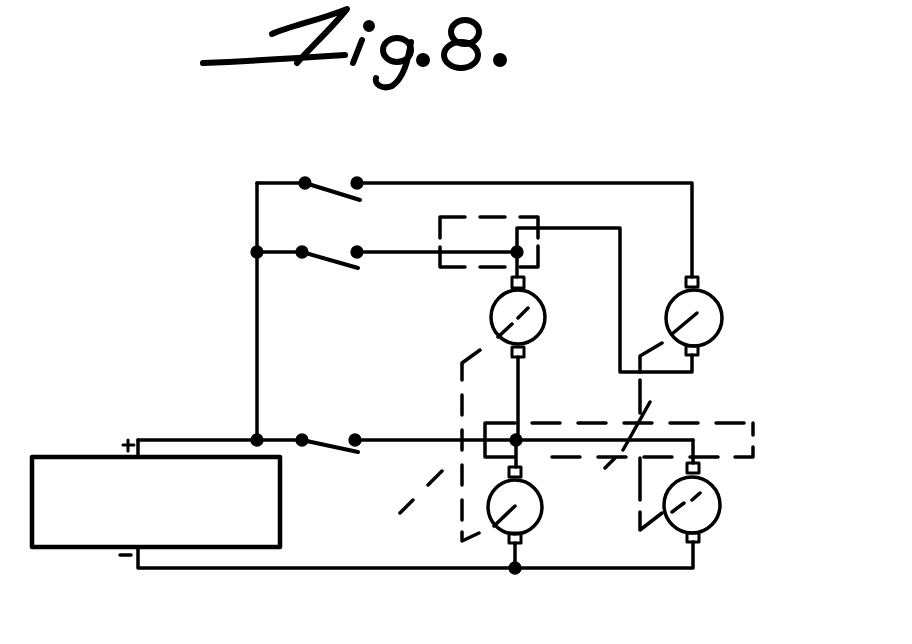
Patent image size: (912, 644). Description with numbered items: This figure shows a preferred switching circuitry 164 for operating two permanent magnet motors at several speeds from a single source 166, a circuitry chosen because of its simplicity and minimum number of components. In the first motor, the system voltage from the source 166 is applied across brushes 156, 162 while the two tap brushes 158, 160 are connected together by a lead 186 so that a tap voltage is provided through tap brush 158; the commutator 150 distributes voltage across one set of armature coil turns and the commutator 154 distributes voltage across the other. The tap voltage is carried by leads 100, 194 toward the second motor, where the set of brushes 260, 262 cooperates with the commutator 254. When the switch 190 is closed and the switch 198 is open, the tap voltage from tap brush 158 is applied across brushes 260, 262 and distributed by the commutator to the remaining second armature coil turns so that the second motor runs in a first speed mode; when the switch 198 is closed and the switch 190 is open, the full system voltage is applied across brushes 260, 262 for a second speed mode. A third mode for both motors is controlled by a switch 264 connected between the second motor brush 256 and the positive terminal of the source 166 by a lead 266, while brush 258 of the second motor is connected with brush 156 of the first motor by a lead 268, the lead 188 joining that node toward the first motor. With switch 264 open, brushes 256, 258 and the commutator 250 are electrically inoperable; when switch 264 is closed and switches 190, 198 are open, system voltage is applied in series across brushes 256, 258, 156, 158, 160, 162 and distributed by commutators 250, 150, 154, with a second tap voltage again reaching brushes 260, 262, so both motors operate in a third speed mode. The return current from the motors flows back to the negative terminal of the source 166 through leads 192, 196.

The lead 100 is at (448, 439).
The commutator 150 is at (531, 319).
The commutator 154 is at (527, 507).
The brush 156 is at (525, 282).
The tap brush 158 is at (525, 352).
The tap brush 160 is at (522, 472).
The brush 162 is at (523, 542).
The circuitry 164 is at (207, 370).
The source 166 is at (106, 460).
The lead 186 is at (518, 387).
The lead 188 is at (227, 410).
The switch 190 is at (329, 262).
The lead 192 is at (355, 570).
The lead 194 is at (662, 436).
The lead 196 is at (633, 570).
The switch 198 is at (331, 452).
The commutator 250 is at (712, 320).
The commutator 254 is at (710, 505).
The brush 256 is at (700, 282).
The brush 258 is at (700, 353).
The brush 260 is at (703, 468).
The brush 262 is at (702, 539).
The switch 264 is at (333, 186).
The lead 266 is at (494, 182).
The lead 268 is at (620, 246).